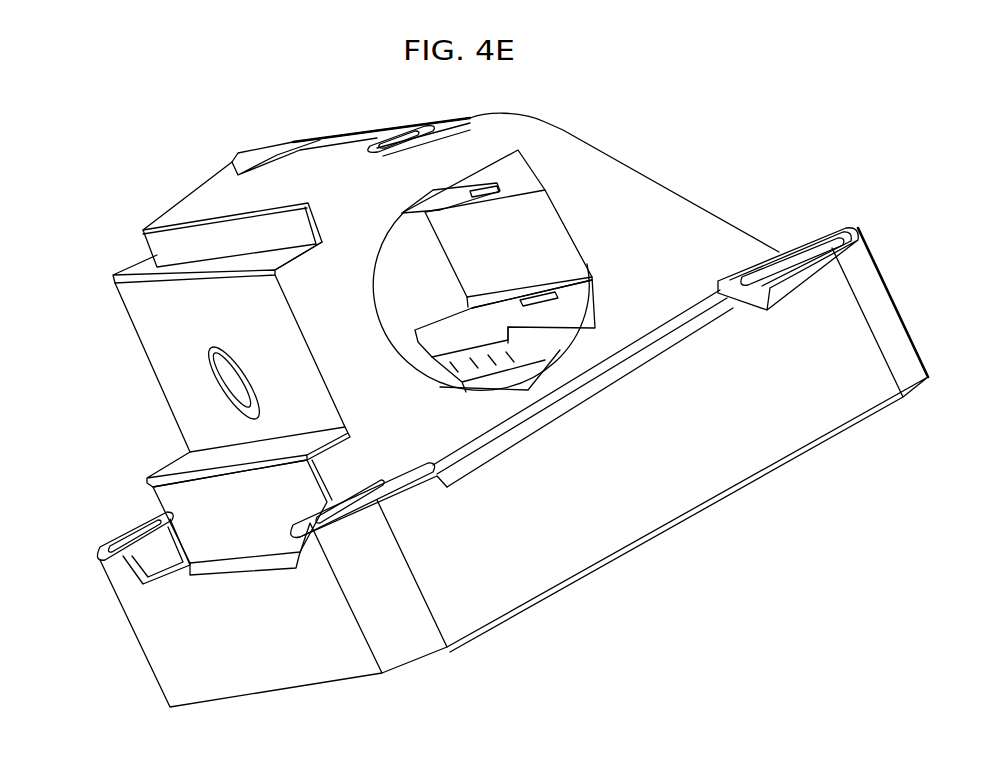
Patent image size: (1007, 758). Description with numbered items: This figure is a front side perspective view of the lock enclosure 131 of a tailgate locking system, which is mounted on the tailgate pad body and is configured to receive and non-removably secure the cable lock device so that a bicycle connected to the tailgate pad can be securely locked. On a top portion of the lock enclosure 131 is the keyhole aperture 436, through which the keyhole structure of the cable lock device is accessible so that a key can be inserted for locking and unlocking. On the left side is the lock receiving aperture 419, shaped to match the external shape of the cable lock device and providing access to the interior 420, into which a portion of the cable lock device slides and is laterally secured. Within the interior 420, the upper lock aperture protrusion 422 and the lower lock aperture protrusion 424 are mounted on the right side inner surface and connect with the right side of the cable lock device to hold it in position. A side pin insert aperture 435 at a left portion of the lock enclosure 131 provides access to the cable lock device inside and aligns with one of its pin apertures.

The lock enclosure 131 is at (147, 153).
The keyhole aperture 436 is at (375, 130).
The lock receiving aperture 419 is at (383, 337).
The interior 420 is at (460, 257).
The upper lock aperture protrusion 422 is at (472, 195).
The lower lock aperture protrusion 424 is at (528, 305).
The side pin insert aperture 435 is at (215, 373).